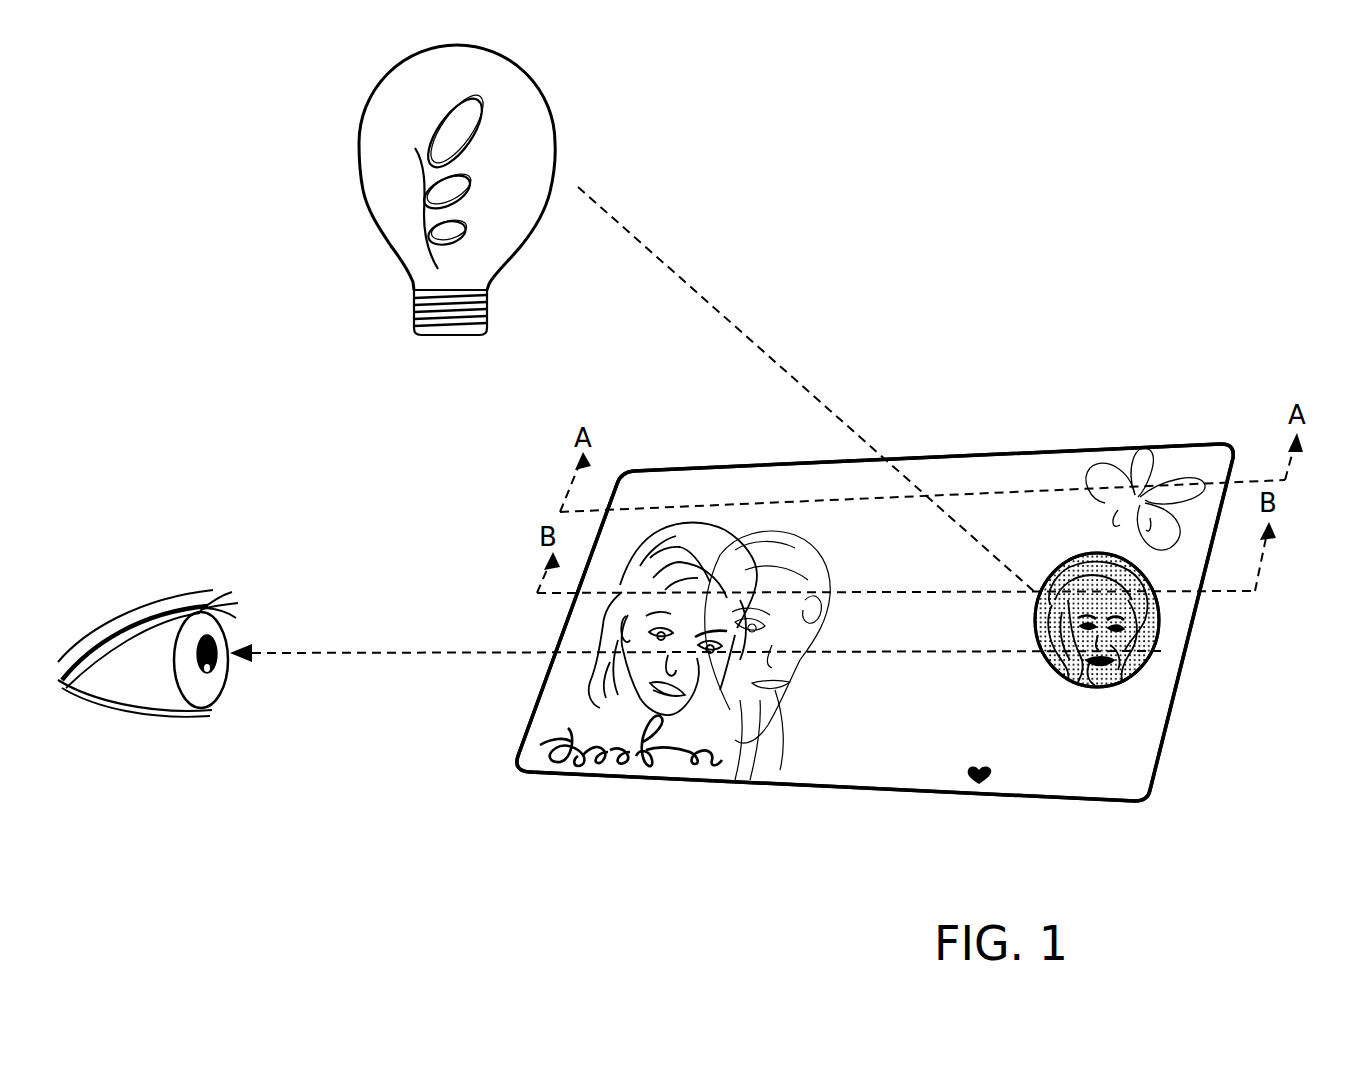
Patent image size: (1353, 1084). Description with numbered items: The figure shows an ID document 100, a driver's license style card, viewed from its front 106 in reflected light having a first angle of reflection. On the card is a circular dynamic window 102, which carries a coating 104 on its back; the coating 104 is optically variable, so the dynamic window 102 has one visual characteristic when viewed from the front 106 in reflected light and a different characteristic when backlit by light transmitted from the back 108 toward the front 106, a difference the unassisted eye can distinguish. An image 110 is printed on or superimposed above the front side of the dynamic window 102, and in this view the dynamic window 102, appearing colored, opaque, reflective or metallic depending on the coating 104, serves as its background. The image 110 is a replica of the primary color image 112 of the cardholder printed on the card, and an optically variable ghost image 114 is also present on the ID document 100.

The ID document 100 is at (718, 445).
The dynamic window 102 is at (1160, 607).
The coating 104 is at (1150, 630).
The front 106 is at (972, 738).
The back 108 is at (1156, 802).
The image 110 is at (1145, 650).
The primary color image 112 is at (628, 608).
The optically variable ghost image 114 is at (743, 705).